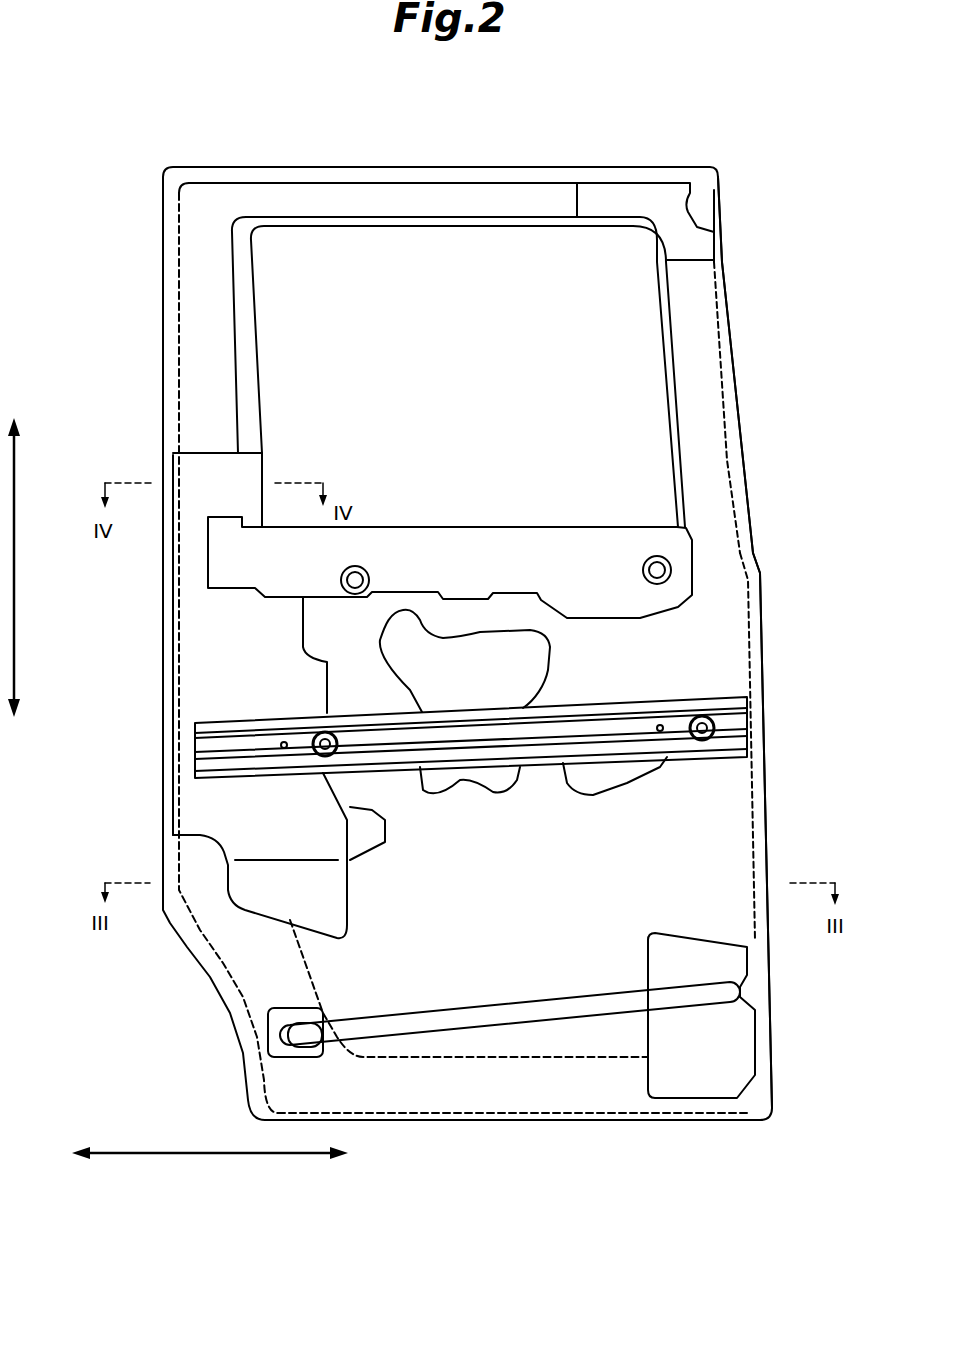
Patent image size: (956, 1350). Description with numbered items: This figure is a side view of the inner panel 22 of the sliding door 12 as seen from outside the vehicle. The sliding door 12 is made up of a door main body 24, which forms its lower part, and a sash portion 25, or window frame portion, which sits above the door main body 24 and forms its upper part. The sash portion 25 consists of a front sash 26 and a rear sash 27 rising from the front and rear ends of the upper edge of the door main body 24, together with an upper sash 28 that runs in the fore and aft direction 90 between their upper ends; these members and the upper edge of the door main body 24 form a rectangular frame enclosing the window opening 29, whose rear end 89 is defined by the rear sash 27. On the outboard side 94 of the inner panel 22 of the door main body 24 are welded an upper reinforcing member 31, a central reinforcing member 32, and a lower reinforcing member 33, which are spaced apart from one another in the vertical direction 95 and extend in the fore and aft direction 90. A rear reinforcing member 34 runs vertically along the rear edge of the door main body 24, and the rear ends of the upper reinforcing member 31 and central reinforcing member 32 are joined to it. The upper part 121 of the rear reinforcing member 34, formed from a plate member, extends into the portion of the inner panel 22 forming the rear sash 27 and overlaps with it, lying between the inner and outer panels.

The sliding door 12 is at (183, 153).
The inner panel 22 is at (496, 1097).
The door main body 24 is at (700, 857).
The sash portion 25 is at (742, 400).
The front sash 26 is at (700, 337).
The rear sash 27 is at (200, 320).
The upper sash 28 is at (462, 197).
The window opening 29 is at (380, 232).
The upper reinforcing member 31 is at (562, 547).
The central reinforcing member 32 is at (540, 762).
The lower reinforcing member 33 is at (553, 1003).
The rear reinforcing member 34 is at (205, 665).
The rear end of the window opening 89 is at (263, 290).
The fore and aft direction 90 is at (140, 1152).
The outboard side of the inner panel 94 is at (723, 637).
The vertical direction 95 is at (15, 490).
The upper part of the rear reinforcing member 121 is at (248, 473).